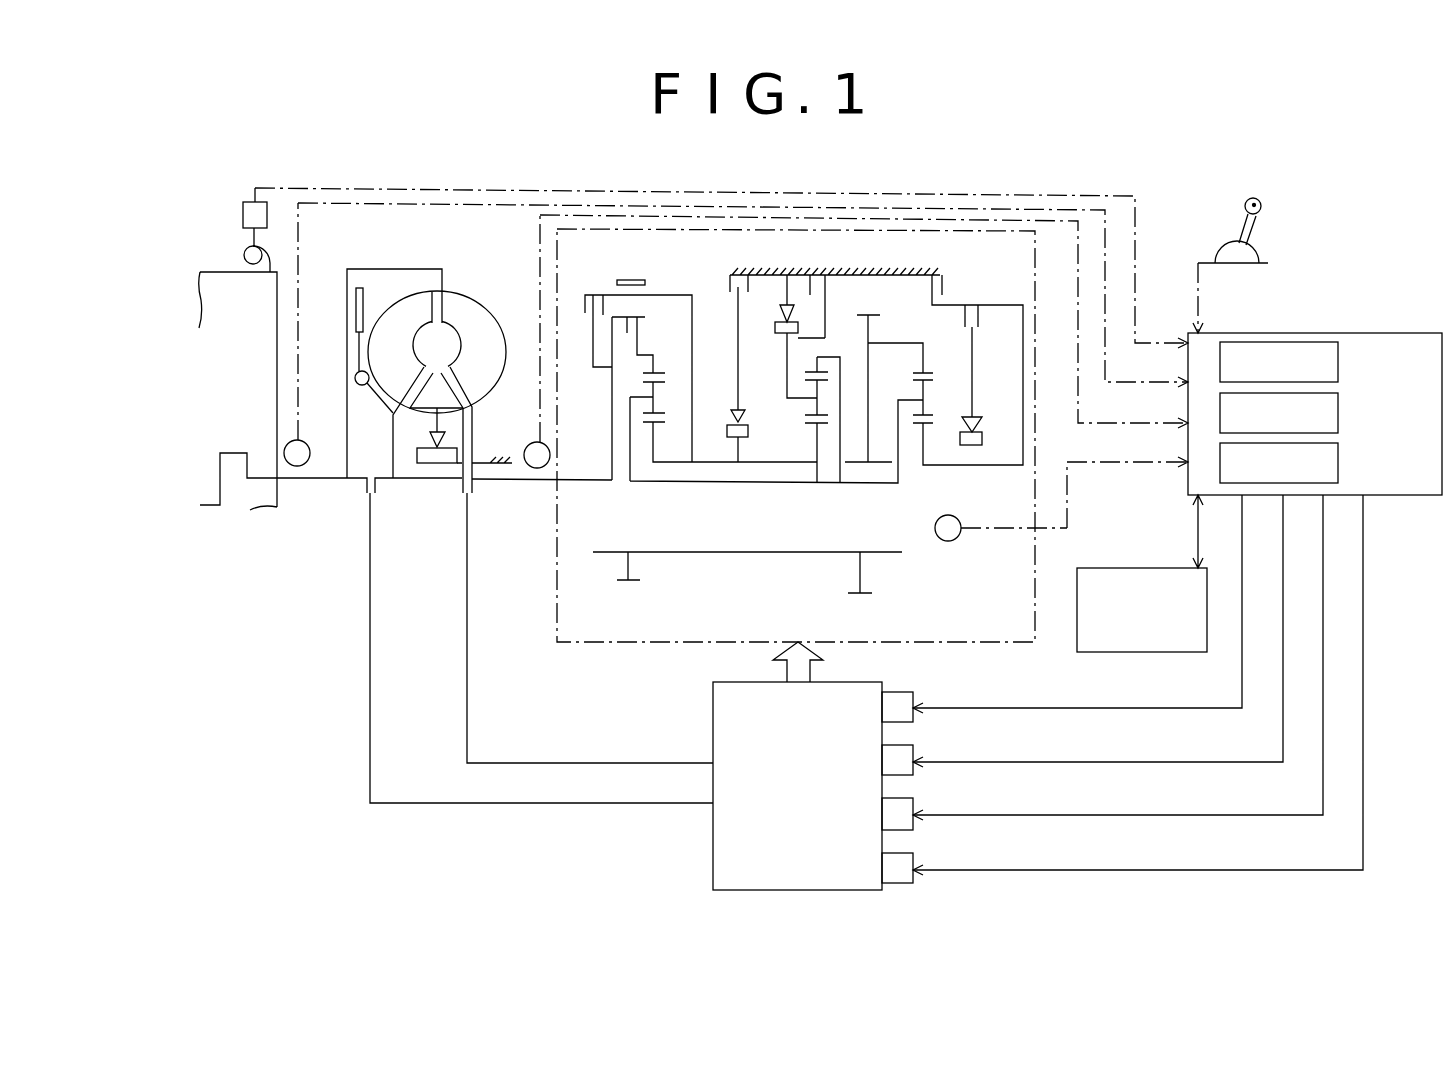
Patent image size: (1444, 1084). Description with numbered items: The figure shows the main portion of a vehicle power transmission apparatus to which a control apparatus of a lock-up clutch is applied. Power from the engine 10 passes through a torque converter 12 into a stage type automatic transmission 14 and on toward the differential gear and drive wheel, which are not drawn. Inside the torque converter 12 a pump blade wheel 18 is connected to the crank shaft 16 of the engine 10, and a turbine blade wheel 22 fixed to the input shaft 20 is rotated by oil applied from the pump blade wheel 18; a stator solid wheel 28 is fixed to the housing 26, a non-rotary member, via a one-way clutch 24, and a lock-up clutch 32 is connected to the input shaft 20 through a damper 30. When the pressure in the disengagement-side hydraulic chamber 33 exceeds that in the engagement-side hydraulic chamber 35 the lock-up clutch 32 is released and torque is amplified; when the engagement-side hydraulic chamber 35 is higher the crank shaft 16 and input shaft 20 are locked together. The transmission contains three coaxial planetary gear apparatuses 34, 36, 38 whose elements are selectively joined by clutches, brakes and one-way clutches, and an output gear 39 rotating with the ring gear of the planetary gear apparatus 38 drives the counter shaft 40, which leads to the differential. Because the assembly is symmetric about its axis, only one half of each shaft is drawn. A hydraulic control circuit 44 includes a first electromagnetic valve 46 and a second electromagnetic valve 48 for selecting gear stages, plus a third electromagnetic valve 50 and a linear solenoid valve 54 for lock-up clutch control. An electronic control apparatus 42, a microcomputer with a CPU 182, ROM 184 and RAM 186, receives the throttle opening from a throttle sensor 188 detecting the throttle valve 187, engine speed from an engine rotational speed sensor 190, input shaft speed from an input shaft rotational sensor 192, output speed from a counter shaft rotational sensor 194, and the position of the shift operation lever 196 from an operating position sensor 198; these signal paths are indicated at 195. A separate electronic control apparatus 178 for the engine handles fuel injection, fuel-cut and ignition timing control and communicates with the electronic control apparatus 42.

The engine 10 is at (253, 375).
The torque converter 12 is at (507, 485).
The automatic transmission 14 is at (796, 435).
The crank shaft 16 is at (318, 480).
The pump blade wheel 18 is at (472, 317).
The input shaft 20 is at (588, 485).
The turbine blade wheel 22 is at (403, 327).
The one-way clutch 24 is at (423, 463).
The housing 26 is at (508, 457).
The stator solid wheel 28 is at (430, 405).
The damper 30 is at (356, 381).
The lock-up clutch 32 is at (356, 308).
The disengagement-side hydraulic chamber 33 is at (358, 474).
The planetary gear apparatus 34 is at (662, 480).
The engagement-side hydraulic chamber 35 is at (420, 275).
The planetary gear apparatus 36 is at (810, 484).
The planetary gear apparatus 38 is at (922, 483).
The output gear 39 is at (870, 325).
The counter shaft 40 is at (752, 553).
The electronic control apparatus 42 is at (1177, 579).
The hydraulic control circuit 44 is at (819, 766).
The first electromagnetic valve 46 is at (897, 690).
The second electromagnetic valve 48 is at (897, 745).
The third electromagnetic valve 50 is at (897, 798).
The linear solenoid valve 54 is at (897, 853).
The electronic control apparatus for an engine 178 is at (1150, 568).
The CPU 182 is at (1338, 362).
The ROM 184 is at (1338, 412).
The RAM 186 is at (1338, 462).
The throttle valve 187 is at (243, 257).
The throttle sensor 188 is at (243, 217).
The engine rotational speed sensor 190 is at (285, 450).
The input shaft rotational sensor 192 is at (533, 463).
The counter shaft rotational sensor 194 is at (950, 538).
The signal lines 195 is at (721, 358).
The shift operation lever 196 is at (1260, 217).
The operating position sensor 198 is at (1235, 255).